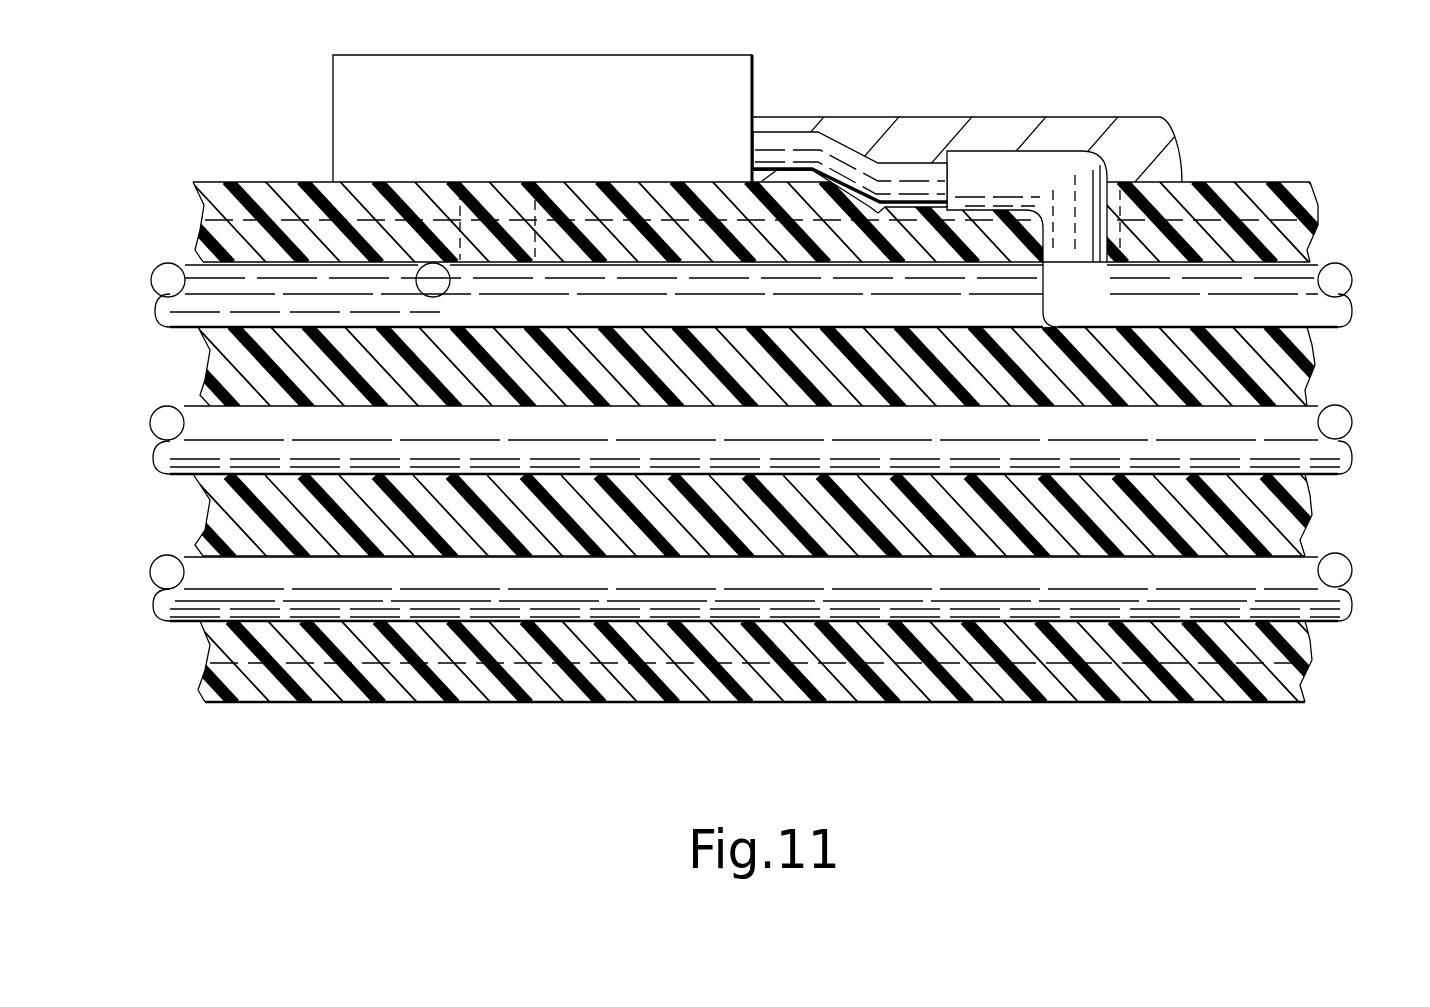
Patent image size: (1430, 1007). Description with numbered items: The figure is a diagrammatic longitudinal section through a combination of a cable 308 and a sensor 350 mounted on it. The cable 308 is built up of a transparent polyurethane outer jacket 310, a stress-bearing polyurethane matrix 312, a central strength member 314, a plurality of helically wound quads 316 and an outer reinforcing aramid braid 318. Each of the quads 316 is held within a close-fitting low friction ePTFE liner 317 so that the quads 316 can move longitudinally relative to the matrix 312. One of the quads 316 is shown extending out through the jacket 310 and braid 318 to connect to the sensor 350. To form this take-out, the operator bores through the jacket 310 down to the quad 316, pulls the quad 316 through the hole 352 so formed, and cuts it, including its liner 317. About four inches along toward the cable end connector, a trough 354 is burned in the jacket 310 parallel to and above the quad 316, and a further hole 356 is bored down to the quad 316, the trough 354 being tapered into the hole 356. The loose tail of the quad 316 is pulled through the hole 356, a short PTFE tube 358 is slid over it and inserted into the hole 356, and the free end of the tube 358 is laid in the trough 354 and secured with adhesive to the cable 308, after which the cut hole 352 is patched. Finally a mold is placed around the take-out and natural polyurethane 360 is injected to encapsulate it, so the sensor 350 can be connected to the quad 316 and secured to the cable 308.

The cable 308 is at (1068, 722).
The outer jacket 310 is at (1160, 703).
The matrix 312 is at (1287, 532).
The central strength member 314 is at (1323, 452).
The quads 316 is at (1292, 278).
The ePTFE liner 317 is at (1322, 325).
The aramid braid 318 is at (1247, 215).
The sensor 350 is at (333, 78).
The hole 352 is at (457, 228).
The trough 354 is at (878, 205).
The hole 356 is at (1155, 168).
The PTFE tube 358 is at (1005, 151).
The natural polyurethane 360 is at (1147, 140).